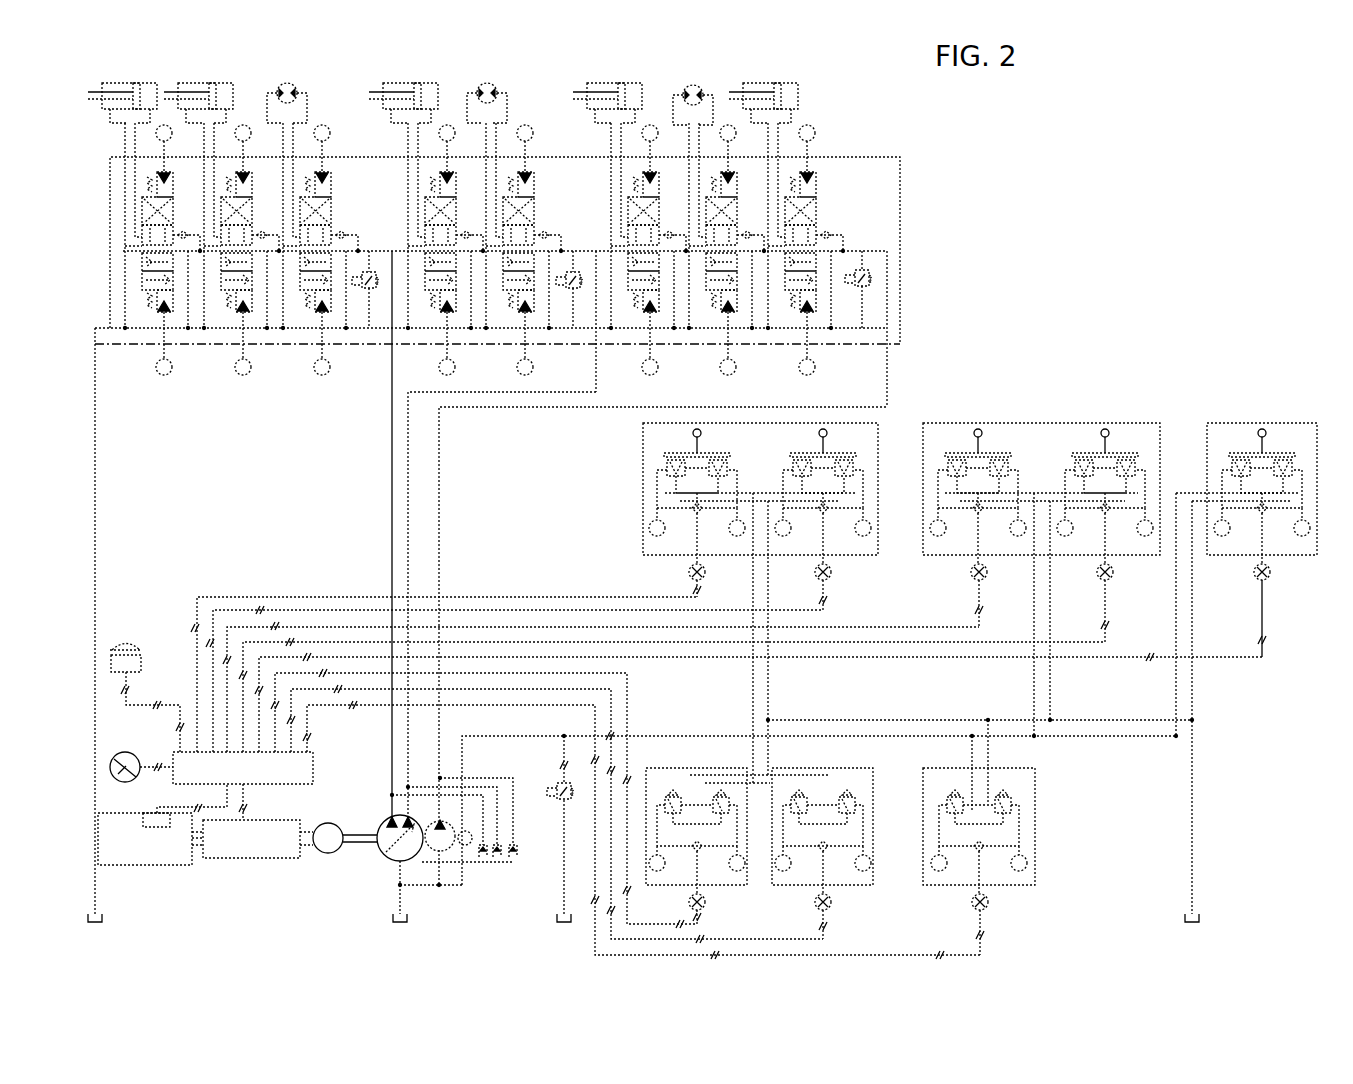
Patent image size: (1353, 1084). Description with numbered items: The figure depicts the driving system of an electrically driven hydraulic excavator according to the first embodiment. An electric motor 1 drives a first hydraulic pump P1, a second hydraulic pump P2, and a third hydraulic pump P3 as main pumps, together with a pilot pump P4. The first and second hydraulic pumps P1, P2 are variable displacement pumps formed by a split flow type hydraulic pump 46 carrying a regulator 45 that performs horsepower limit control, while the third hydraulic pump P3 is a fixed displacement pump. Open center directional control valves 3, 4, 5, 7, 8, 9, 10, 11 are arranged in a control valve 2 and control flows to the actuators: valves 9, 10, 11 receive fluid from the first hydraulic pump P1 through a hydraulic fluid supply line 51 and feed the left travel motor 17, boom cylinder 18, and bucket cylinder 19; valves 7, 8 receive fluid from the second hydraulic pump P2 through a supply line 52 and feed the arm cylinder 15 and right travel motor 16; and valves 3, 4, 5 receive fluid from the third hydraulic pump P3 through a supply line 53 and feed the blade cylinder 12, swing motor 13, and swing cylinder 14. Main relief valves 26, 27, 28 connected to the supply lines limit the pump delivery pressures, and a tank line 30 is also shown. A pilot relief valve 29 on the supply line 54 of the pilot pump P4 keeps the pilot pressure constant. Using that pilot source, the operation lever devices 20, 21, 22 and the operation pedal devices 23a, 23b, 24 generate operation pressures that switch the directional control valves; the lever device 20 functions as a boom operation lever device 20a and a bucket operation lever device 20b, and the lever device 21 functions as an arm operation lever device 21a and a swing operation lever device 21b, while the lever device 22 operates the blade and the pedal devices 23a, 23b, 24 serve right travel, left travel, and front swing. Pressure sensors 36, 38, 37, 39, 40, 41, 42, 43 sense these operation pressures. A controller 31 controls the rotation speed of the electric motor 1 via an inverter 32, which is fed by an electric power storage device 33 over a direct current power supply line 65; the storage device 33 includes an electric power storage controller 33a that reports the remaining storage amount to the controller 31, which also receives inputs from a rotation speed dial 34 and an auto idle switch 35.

The electric motor 1 is at (330, 823).
The control valve 2 is at (856, 156).
The directional control valve 3 is at (818, 196).
The directional control valve 4 is at (739, 196).
The directional control valve 5 is at (661, 196).
The directional control valve 7 is at (458, 196).
The directional control valve 8 is at (536, 196).
The directional control valve 9 is at (333, 196).
The directional control valve 10 is at (254, 196).
The directional control valve 11 is at (175, 196).
The blade cylinder 12 is at (745, 83).
The swing motor 13 is at (690, 85).
The swing cylinder 14 is at (603, 83).
The arm cylinder 15 is at (398, 83).
The right travel motor 16 is at (485, 83).
The left travel motor 17 is at (284, 83).
The boom cylinder 18 is at (198, 83).
The bucket cylinder 19 is at (121, 83).
The operation lever device 20 is at (641, 449).
The boom operation lever device 20a is at (690, 447).
The bucket operation lever device 20b is at (812, 447).
The operation lever device 21 is at (958, 422).
The arm operation lever device 21a is at (972, 447).
The swing operation lever device 21b is at (1098, 447).
The operation lever device 22 is at (1224, 422).
The operation pedal device 23a is at (672, 768).
The operation pedal device 23b is at (843, 768).
The operation pedal device 24 is at (955, 768).
The main relief valve 26 is at (372, 293).
The main relief valve 27 is at (575, 292).
The main relief valve 28 is at (870, 292).
The pilot relief valve 29 is at (559, 803).
The tank line 30 is at (131, 332).
The controller 31 is at (315, 770).
The inverter 32 is at (253, 860).
The electric power storage device 33 is at (140, 866).
The electric power storage controller 33a is at (150, 813).
The rotation speed dial 34 is at (128, 751).
The auto idle switch 35 is at (127, 642).
The pressure sensor 36 is at (706, 574).
The pressure sensor 37 is at (988, 574).
The pressure sensor 38 is at (832, 574).
The pressure sensor 39 is at (1114, 574).
The pressure sensor 40 is at (706, 904).
The pressure sensor 41 is at (832, 904).
The pressure sensor 42 is at (989, 904).
The pressure sensor 43 is at (1271, 574).
The regulator 45 is at (492, 880).
The split flow type hydraulic pump 46 is at (422, 860).
The hydraulic fluid supply line 51 is at (392, 521).
The hydraulic fluid supply line 52 is at (410, 507).
The hydraulic fluid supply line 53 is at (442, 502).
The hydraulic fluid supply line 54 is at (510, 735).
The direct current electric power supply line 65 is at (199, 846).
The first hydraulic pump P1 is at (385, 813).
The second hydraulic pump P2 is at (414, 813).
The third hydraulic pump P3 is at (440, 830).
The pilot pump P4 is at (469, 831).